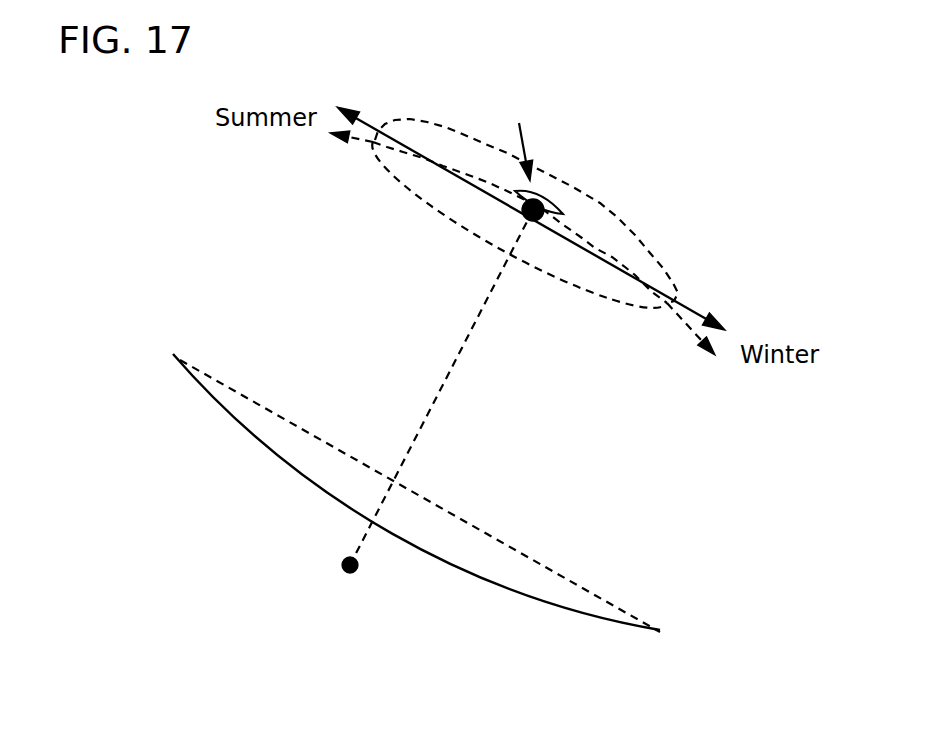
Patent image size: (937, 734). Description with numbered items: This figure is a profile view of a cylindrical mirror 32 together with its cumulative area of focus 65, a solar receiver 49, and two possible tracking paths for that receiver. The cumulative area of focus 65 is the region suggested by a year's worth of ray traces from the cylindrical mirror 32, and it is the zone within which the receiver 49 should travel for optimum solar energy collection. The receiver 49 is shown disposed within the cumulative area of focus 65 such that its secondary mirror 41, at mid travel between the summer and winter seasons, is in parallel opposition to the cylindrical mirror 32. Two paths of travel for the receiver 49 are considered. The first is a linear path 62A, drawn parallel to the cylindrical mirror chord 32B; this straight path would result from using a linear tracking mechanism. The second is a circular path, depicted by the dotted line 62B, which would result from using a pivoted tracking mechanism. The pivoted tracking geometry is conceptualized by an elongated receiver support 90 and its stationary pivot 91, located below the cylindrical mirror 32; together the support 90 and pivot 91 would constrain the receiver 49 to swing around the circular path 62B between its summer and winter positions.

The cylindrical mirror 32 is at (176, 364).
The cylindrical mirror chord 32B is at (262, 404).
The secondary mirror 41 is at (552, 200).
The receiver 49 is at (521, 137).
The linear path 62A is at (683, 304).
The circular path 62B is at (677, 320).
The cumulative area of focus 65 is at (618, 217).
The elongated receiver support 90 is at (455, 361).
The stationary pivot 91 is at (342, 564).